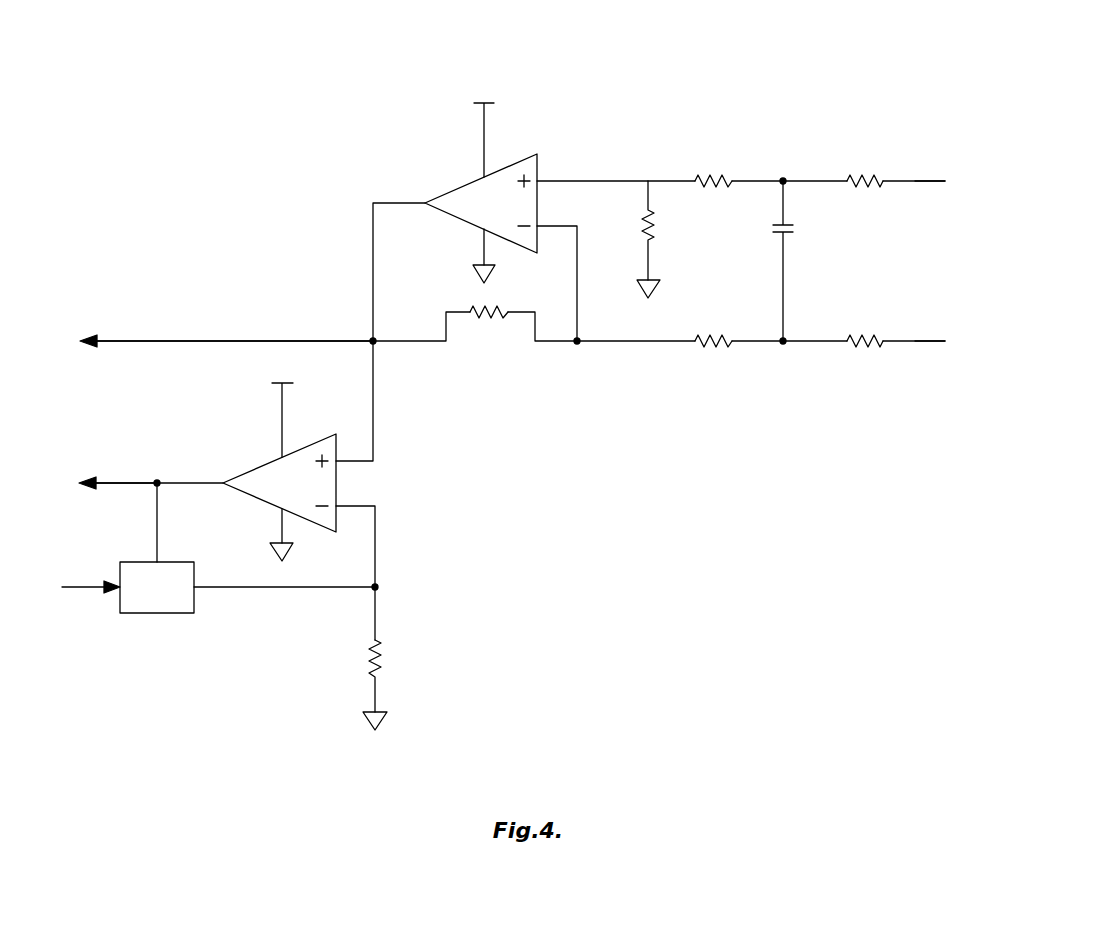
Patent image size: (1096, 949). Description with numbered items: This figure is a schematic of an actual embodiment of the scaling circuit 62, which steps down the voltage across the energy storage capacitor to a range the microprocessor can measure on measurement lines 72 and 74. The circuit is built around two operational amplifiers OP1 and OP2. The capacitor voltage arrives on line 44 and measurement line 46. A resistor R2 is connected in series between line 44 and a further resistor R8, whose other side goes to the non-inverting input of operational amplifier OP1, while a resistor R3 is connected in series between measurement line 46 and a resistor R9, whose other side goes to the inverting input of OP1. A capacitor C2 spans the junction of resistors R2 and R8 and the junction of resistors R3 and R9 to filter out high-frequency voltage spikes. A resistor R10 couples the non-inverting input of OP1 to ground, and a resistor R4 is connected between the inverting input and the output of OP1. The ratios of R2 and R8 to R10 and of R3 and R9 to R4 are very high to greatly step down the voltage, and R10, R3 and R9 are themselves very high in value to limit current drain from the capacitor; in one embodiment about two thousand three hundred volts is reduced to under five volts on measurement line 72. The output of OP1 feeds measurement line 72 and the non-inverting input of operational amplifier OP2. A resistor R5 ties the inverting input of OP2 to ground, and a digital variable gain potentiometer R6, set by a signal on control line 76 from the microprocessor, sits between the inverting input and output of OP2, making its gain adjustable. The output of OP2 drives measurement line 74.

The scaling circuit 62 is at (715, 96).
The measurement line 72 is at (180, 338).
The measurement line 74 is at (130, 480).
The control line 76 is at (80, 583).
The line 44 is at (920, 185).
The measurement line 46 is at (920, 345).
The operational amplifier OP1 is at (519, 152).
The operational amplifier OP2 is at (316, 435).
The resistor R2 is at (855, 176).
The resistor R3 is at (855, 336).
The resistor R4 is at (490, 315).
The resistor R5 is at (368, 665).
The digital variable gain potentiometer R6 is at (157, 615).
The resistor R8 is at (713, 185).
The resistor R9 is at (713, 345).
The resistor R10 is at (645, 228).
The capacitor C2 is at (800, 230).